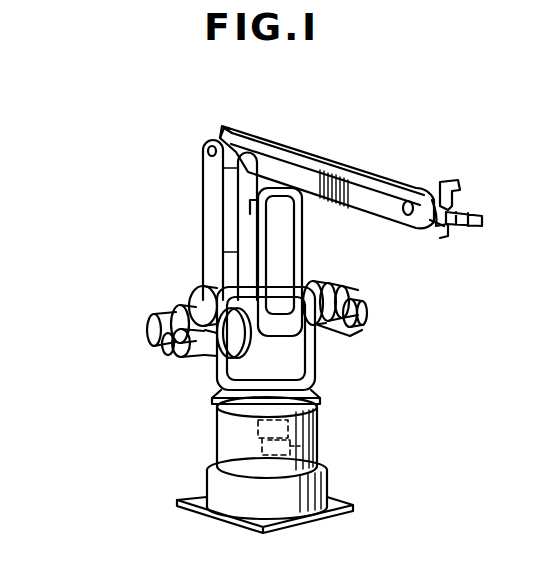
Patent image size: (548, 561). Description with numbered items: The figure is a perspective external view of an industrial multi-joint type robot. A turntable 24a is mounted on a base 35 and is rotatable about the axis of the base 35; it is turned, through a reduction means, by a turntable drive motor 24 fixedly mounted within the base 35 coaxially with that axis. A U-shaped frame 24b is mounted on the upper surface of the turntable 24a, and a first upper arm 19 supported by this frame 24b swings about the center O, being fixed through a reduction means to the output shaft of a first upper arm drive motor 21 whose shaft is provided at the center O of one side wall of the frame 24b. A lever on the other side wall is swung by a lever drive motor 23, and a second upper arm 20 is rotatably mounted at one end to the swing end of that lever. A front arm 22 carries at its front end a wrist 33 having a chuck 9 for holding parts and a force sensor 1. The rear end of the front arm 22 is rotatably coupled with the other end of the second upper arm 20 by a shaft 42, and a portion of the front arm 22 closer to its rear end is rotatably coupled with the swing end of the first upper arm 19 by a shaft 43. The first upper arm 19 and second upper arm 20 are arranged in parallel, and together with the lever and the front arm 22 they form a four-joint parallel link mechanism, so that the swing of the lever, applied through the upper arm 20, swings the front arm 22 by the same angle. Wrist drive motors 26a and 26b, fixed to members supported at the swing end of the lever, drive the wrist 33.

The force sensor 1 is at (449, 170).
The chuck 9 is at (478, 216).
The first upper arm 19 is at (283, 239).
The second upper arm 20 is at (207, 223).
The first upper arm drive motor 21 is at (345, 343).
The front arm 22 is at (378, 184).
The lever drive motor 23 is at (214, 354).
The turntable drive motor 24 is at (258, 430).
The turntable 24a is at (326, 417).
The U-shaped frame 24b is at (318, 357).
The wrist drive motor 26a is at (314, 291).
The wrist drive motor 26b is at (190, 303).
The wrist 33 is at (438, 228).
The base 35 is at (213, 491).
The shaft 42 is at (207, 150).
The shaft 43 is at (228, 127).